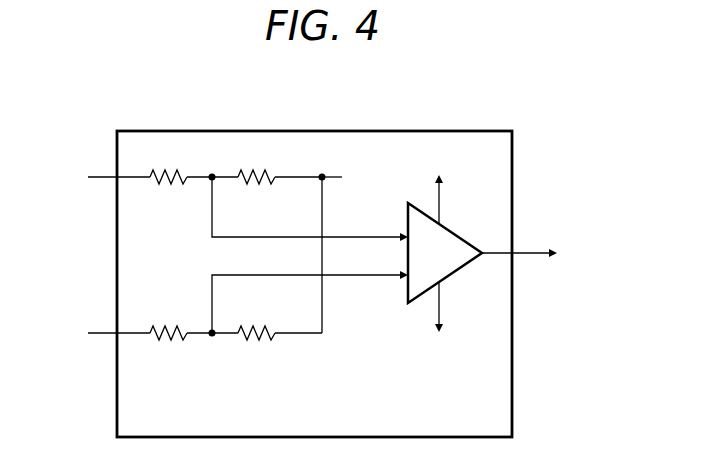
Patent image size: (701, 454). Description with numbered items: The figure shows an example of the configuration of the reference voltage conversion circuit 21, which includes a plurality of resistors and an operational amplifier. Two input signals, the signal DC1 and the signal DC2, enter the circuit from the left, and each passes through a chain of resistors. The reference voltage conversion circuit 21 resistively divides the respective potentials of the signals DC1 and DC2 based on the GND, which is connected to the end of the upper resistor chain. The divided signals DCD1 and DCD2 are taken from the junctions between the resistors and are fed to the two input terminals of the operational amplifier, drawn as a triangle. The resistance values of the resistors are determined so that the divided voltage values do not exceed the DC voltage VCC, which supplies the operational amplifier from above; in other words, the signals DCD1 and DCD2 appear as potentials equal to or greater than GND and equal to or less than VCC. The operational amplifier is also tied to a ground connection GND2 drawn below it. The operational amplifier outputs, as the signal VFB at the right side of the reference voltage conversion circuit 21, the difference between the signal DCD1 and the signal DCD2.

The reference voltage conversion circuit 21 is at (169, 131).
The signal DC1 is at (179, 183).
The signal DC2 is at (177, 339).
The divided signal DCD1 is at (310, 209).
The divided signal DCD2 is at (310, 302).
The element GND is at (360, 248).
The amplifier ground connection GND2 is at (438, 322).
The DC voltage VCC is at (439, 183).
The signal VFB is at (545, 253).